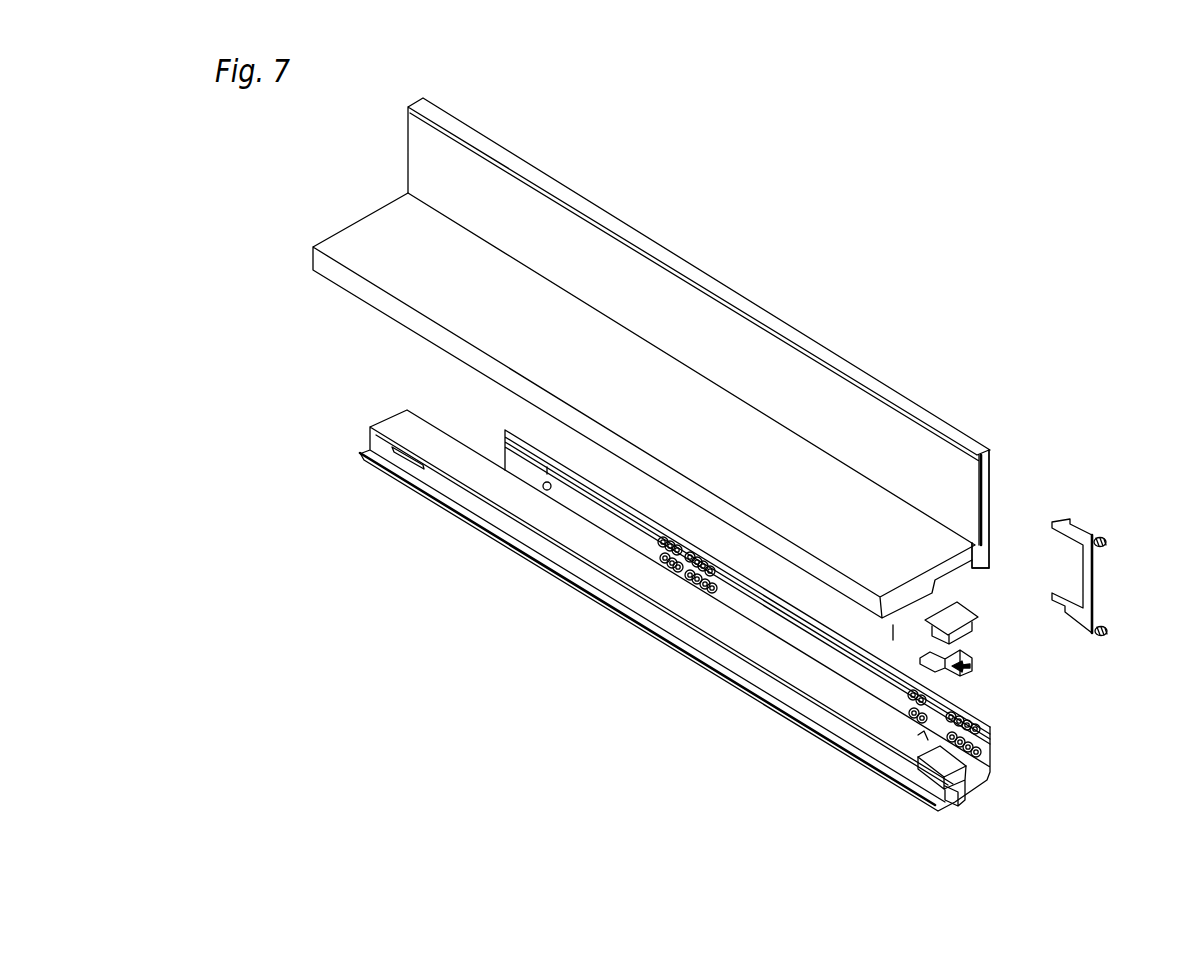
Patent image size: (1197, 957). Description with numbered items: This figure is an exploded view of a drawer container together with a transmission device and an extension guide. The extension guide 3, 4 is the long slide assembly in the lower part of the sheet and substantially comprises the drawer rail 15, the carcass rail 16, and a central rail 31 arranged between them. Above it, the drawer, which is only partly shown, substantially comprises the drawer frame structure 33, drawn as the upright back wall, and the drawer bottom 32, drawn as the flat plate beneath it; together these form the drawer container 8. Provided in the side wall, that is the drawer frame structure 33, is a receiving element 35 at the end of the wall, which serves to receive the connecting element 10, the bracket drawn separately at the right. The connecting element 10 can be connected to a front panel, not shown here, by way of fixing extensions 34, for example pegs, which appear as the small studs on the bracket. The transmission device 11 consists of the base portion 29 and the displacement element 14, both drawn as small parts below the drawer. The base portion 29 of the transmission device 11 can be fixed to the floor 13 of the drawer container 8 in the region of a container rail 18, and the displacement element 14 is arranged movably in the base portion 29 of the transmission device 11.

The extension guide 3 is at (744, 632).
The extension guide 4 is at (744, 632).
The drawer container 8 is at (651, 358).
The connecting element 10 is at (1119, 550).
The transmission device 11 is at (1036, 675).
The floor 13 is at (894, 640).
The displacement element 14 is at (972, 672).
The drawer rail 15 is at (670, 593).
The carcass rail 16 is at (568, 490).
The container rail 18 is at (963, 558).
The base portion 29 is at (950, 620).
The central rail 31 is at (962, 795).
The drawer bottom 32 is at (602, 357).
The drawer frame structure 33 is at (705, 330).
The fixing extensions 34 is at (1105, 538).
The receiving element 35 is at (996, 470).